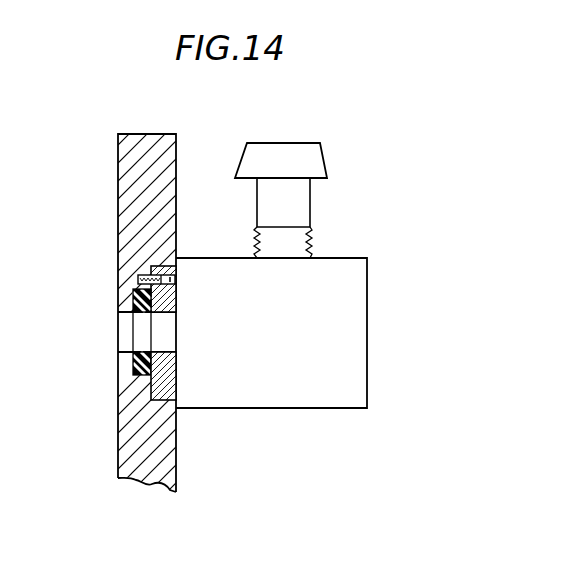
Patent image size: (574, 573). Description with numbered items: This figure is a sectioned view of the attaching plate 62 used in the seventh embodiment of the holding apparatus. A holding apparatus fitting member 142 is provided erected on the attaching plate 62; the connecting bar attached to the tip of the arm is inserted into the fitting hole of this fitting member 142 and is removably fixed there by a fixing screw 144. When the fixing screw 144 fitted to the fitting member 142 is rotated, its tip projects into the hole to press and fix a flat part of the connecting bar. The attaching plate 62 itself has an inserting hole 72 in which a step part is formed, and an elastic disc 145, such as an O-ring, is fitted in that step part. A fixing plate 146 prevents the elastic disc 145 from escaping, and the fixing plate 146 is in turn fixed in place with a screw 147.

The attaching plate 62 is at (125, 195).
The inserting hole 72 is at (123, 344).
The holding apparatus fitting member 142 is at (310, 408).
The fixing screw 144 is at (326, 158).
The elastic disc 145 is at (121, 307).
The fixing plate 146 is at (176, 378).
The screw 147 is at (176, 284).